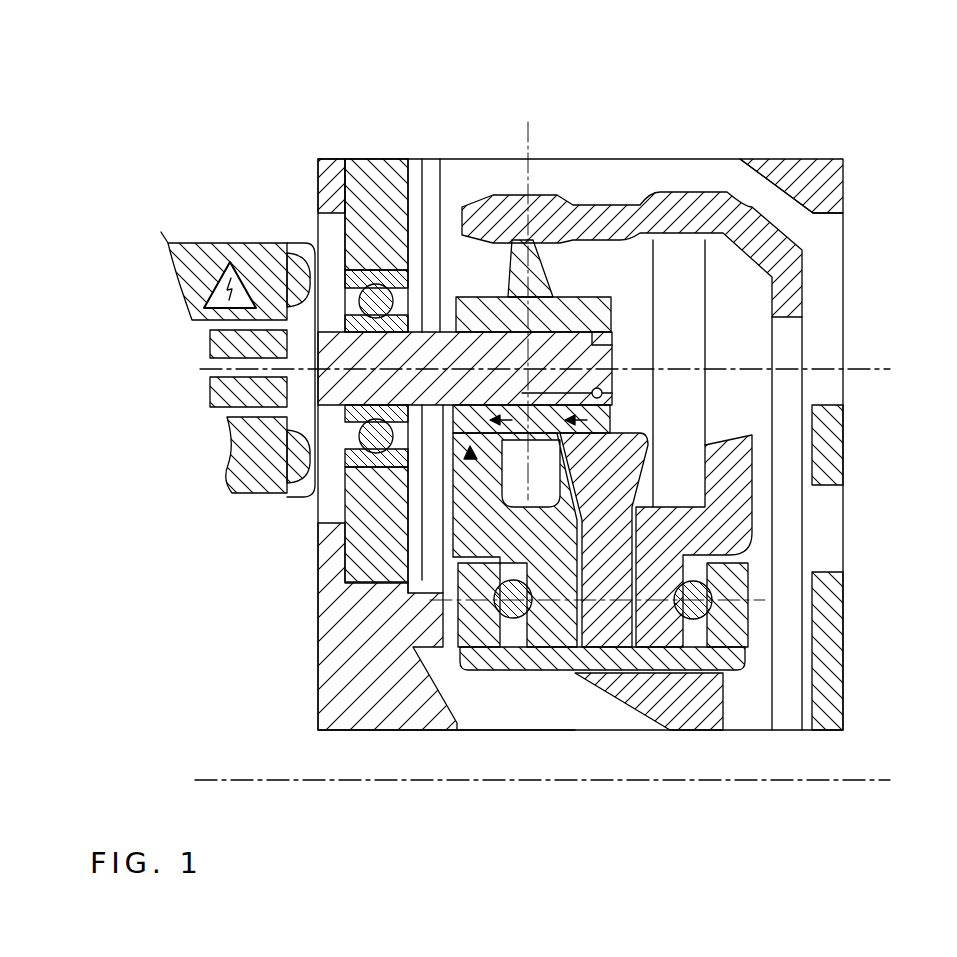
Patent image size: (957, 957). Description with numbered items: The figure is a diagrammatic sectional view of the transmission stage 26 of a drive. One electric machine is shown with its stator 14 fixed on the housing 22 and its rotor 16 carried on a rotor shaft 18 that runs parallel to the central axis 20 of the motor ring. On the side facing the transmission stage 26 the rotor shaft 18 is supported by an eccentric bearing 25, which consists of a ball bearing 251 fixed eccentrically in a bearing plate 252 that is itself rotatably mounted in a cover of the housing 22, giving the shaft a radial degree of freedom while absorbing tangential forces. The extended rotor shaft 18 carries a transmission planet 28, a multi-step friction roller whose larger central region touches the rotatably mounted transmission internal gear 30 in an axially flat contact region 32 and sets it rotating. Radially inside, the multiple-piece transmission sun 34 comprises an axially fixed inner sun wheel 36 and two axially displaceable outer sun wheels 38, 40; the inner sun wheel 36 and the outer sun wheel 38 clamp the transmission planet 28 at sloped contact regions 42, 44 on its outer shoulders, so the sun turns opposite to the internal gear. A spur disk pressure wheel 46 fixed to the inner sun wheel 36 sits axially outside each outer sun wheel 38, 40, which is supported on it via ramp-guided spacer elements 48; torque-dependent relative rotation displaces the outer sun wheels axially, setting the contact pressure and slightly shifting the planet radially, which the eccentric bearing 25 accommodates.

The stator 14 is at (197, 257).
The rotor 16 is at (277, 337).
The rotor shaft 18 is at (461, 349).
The central axis 20 is at (828, 781).
The housing 22 is at (338, 714).
The eccentric bearing 25 is at (341, 147).
The ball bearing 251 is at (348, 468).
The bearing plate 252 is at (385, 179).
The transmission stage 26 is at (788, 118).
The transmission planet 28 is at (580, 311).
The transmission internal gear 30 is at (722, 212).
The contact region 32 is at (524, 228).
The transmission sun 34 is at (566, 700).
The inner sun wheel 36 is at (602, 623).
The outer sun wheel 38 is at (543, 641).
The outer sun wheel 40 is at (650, 641).
The contact region 42 is at (588, 458).
The contact region 44 is at (447, 605).
The spur disk pressure wheel 46 is at (469, 458).
The spacer element 48 is at (700, 602).